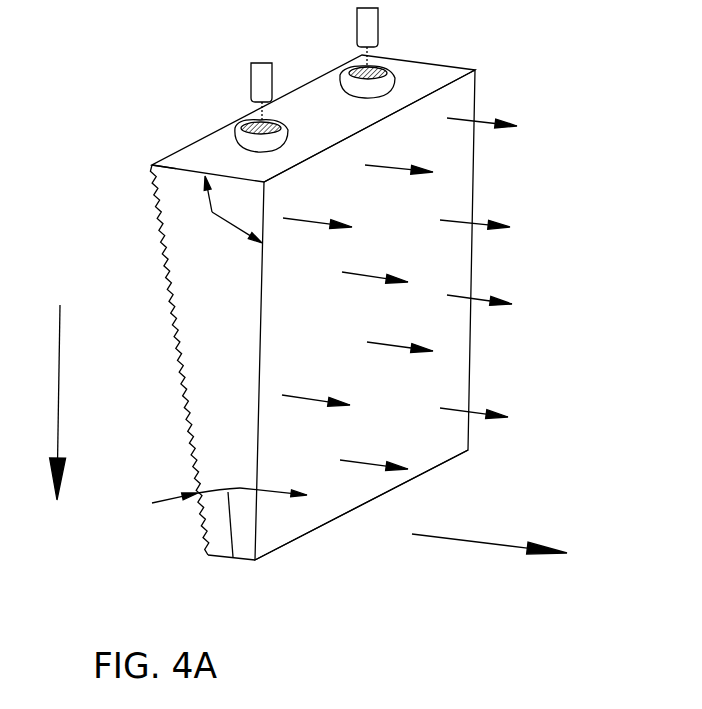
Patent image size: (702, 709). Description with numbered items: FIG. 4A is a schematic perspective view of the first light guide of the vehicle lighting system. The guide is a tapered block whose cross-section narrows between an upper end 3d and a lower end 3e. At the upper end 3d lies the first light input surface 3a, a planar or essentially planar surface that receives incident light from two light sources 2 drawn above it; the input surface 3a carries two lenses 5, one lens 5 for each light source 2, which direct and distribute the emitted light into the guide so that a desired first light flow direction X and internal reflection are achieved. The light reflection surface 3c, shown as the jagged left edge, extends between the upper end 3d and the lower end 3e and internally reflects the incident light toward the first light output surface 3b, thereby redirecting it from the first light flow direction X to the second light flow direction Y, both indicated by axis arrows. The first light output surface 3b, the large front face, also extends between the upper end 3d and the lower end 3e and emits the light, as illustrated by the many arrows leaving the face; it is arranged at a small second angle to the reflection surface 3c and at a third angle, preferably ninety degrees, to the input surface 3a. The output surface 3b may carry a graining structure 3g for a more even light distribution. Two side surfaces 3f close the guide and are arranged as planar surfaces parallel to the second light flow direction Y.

The light source 2 is at (251, 82).
The lens 5 is at (235, 136).
The first light input surface 3a is at (418, 83).
The first light output surface 3b is at (443, 188).
The light reflection surface 3c is at (158, 212).
The upper end 3d is at (127, 147).
The lower end 3e is at (188, 562).
The side surface 3f is at (215, 267).
The graining structure 3g is at (430, 380).
The first light flow direction X is at (71, 402).
The second light flow direction Y is at (489, 537).